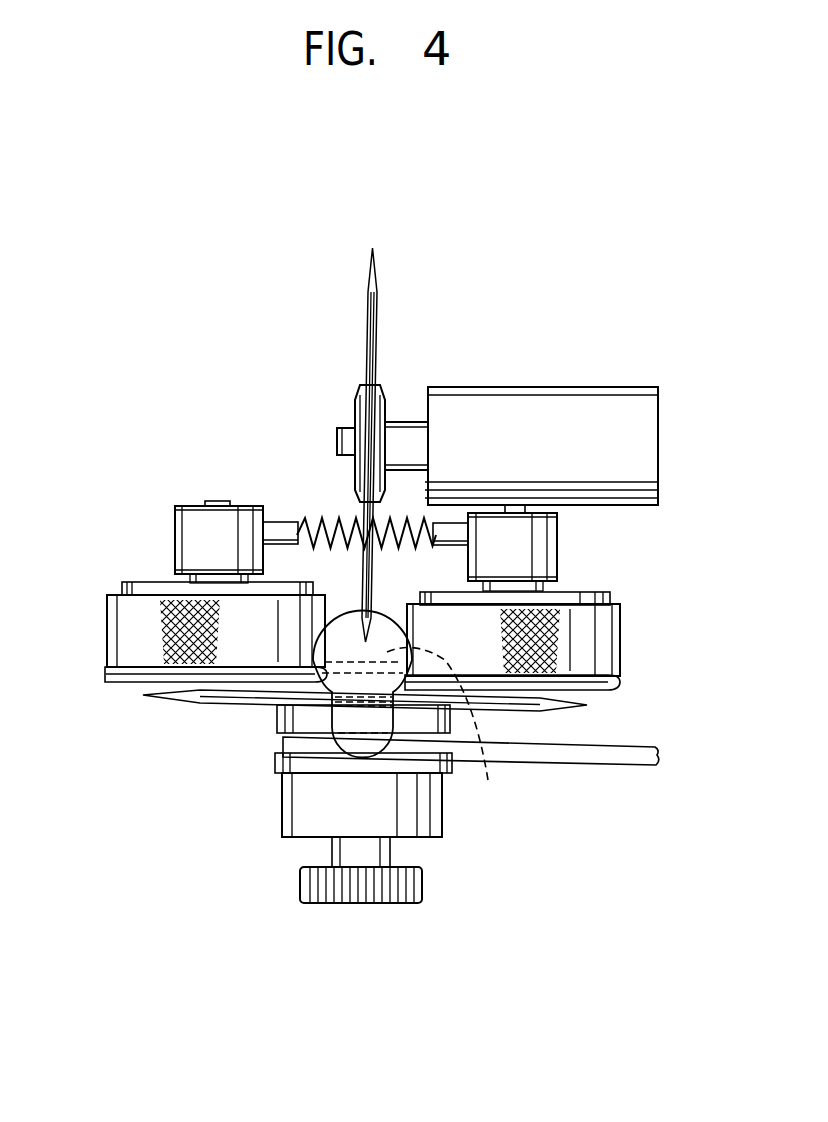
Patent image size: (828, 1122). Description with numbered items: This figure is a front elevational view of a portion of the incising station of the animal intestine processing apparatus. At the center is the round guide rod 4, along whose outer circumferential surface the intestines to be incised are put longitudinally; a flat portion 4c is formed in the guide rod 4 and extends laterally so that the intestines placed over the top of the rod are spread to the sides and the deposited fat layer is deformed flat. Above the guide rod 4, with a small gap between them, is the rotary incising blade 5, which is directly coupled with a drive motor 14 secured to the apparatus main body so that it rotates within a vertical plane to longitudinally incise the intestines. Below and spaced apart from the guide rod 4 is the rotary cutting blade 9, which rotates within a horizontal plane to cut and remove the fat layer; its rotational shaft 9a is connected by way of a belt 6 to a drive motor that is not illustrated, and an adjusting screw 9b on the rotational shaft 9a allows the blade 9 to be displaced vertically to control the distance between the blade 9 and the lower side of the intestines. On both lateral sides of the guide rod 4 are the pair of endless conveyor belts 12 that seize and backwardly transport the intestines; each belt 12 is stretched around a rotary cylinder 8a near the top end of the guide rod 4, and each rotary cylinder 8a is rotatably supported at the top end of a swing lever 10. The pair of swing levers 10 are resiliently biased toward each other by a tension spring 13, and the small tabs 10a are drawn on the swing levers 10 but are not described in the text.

The guide rod 4 is at (350, 718).
The flat portion 4c is at (445, 731).
The rotary incising blade 5 is at (367, 335).
The belt 6 is at (635, 758).
The rotary cylinder 8a is at (123, 587).
The rotary cutting blade 9 is at (208, 698).
The rotational shaft 9a is at (438, 812).
The adjusting screw 9b is at (420, 885).
The swing lever 10 is at (175, 537).
The clamp tab 10a is at (217, 501).
The endless conveyor belt 12 is at (120, 645).
The tension spring 13 is at (333, 520).
The drive motor 14 is at (633, 400).